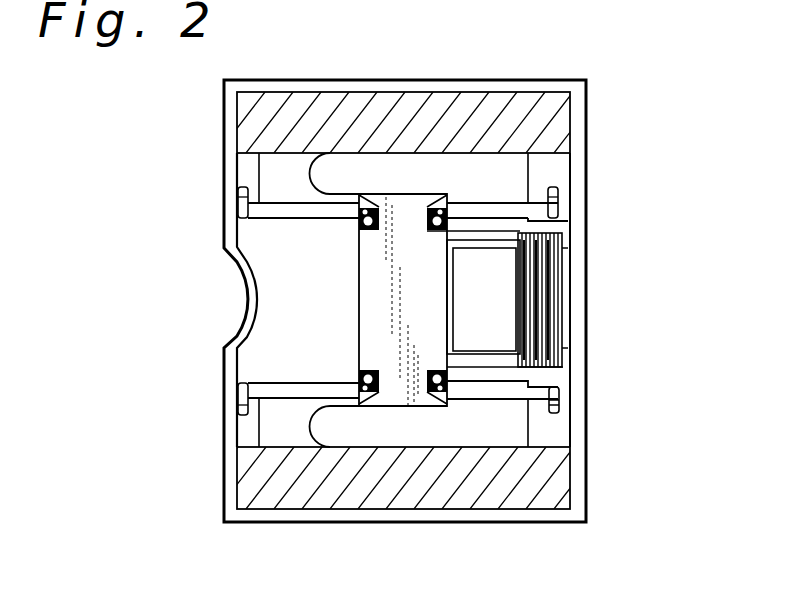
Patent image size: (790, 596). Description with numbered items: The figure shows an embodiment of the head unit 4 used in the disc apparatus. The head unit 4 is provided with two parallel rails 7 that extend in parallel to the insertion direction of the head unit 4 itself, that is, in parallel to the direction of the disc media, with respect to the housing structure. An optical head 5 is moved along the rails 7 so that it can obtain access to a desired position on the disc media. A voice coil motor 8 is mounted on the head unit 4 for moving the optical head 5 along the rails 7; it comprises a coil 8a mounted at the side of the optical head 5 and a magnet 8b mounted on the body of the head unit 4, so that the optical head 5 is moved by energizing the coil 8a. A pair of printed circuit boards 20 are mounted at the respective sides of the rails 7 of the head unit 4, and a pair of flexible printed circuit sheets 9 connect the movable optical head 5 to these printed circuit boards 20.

The head unit 4 is at (592, 499).
The printed circuit boards 20 is at (319, 122).
The flexible printed circuit sheets 9 is at (322, 182).
The rails 7 is at (522, 211).
The optical head 5 is at (376, 302).
The voice coil motor 8 is at (566, 277).
The coil 8a is at (548, 311).
The magnet 8b is at (507, 340).